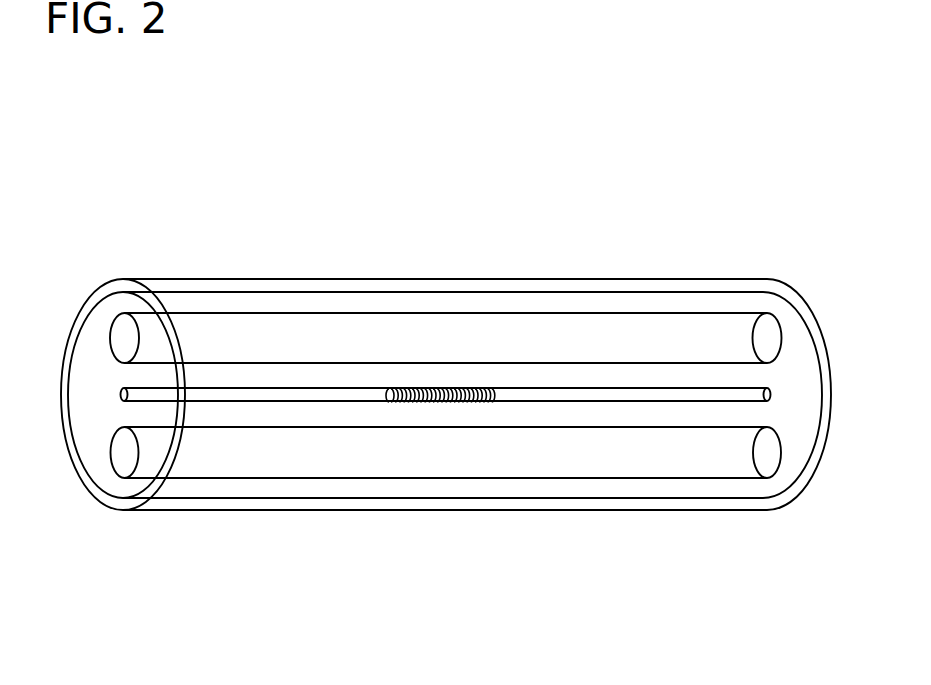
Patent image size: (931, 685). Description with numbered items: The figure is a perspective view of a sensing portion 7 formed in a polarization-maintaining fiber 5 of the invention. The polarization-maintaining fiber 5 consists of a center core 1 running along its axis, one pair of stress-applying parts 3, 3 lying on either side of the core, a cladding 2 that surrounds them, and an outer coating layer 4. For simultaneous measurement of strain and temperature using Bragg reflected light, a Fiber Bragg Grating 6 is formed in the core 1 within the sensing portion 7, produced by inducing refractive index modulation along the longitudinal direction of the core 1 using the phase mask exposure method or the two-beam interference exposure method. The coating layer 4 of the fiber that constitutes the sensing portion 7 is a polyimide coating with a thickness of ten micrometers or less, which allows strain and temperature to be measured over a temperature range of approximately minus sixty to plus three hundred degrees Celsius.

The center core 1 is at (317, 398).
The cladding 2 is at (102, 472).
The stress-applying parts 3 is at (254, 330).
The coating layer 4 is at (407, 285).
The polarization-maintaining fiber 5 is at (156, 207).
The Fiber Bragg Grating 6 is at (438, 402).
The sensing portion 7 is at (151, 264).